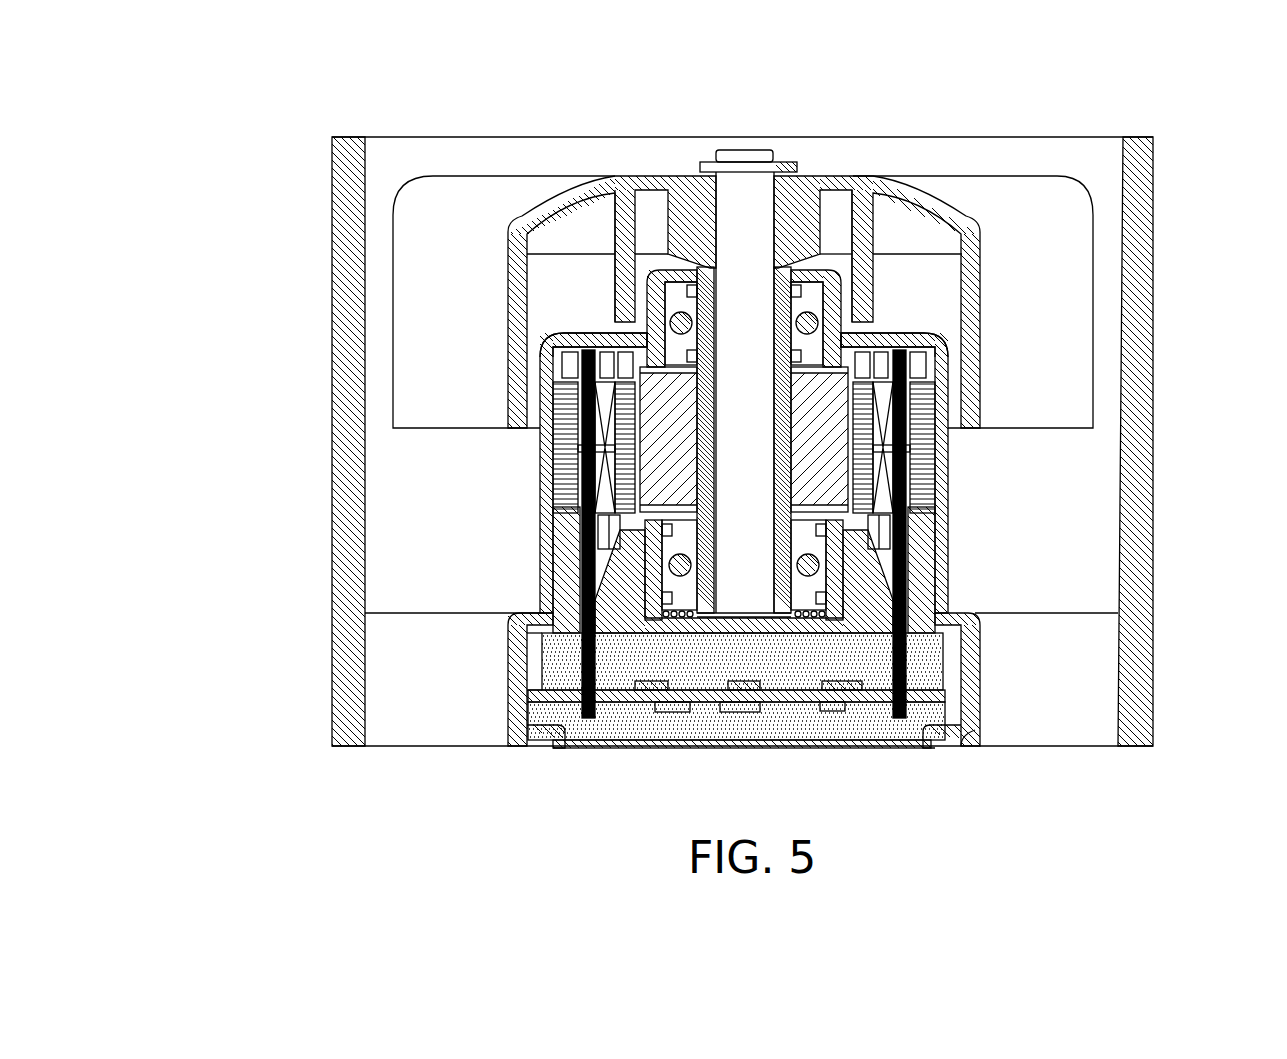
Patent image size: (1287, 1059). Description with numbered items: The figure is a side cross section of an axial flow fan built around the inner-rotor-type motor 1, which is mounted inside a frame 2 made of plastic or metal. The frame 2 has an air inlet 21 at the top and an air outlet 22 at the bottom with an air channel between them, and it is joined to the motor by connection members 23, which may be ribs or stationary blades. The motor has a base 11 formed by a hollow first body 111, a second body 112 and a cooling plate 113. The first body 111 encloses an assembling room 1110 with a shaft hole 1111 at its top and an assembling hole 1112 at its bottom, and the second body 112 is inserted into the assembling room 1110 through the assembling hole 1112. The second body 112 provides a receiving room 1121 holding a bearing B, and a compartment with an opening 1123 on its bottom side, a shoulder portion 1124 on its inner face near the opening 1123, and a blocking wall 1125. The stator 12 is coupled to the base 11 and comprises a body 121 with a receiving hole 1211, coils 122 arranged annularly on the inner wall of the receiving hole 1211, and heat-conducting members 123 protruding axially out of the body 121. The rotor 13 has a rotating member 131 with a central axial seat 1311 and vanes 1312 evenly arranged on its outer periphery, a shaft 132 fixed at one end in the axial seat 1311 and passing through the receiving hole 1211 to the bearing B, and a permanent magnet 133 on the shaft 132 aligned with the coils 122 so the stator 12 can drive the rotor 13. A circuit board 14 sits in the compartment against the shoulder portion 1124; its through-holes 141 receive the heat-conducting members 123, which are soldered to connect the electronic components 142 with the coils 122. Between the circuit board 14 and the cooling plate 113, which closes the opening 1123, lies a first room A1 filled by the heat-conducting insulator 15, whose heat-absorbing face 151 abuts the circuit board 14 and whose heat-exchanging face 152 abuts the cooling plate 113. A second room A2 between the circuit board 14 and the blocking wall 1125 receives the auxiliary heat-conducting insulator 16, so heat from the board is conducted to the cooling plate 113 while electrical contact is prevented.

The inner-rotor-type motor 1 is at (1010, 135).
The frame 2 is at (1145, 345).
The air inlet 21 is at (1077, 137).
The air outlet 22 is at (1086, 749).
The connection members 23 is at (1077, 623).
The base 11 is at (714, 595).
The first body 111 is at (517, 594).
The second body 112 is at (507, 664).
The cooling plate 113 is at (617, 748).
The assembling room 1110 is at (552, 361).
The shaft hole 1111 is at (687, 266).
The assembling hole 1112 is at (951, 749).
The receiving room 1121 is at (644, 570).
The opening 1123 is at (973, 707).
The shoulder portion 1124 is at (973, 666).
The blocking wall 1125 is at (551, 666).
The stator 12 is at (758, 534).
The body 121 is at (893, 547).
The coils 122 is at (883, 418).
The heat-conducting members 123 is at (913, 462).
The receiving hole 1211 is at (627, 530).
The rotor 13 is at (547, 186).
The rotating member 131 is at (906, 191).
The axial seat 1311 is at (812, 223).
The vanes 1312 is at (423, 190).
The shaft 132 is at (735, 178).
The permanent magnet 133 is at (657, 423).
The circuit board 14 is at (781, 698).
The through-holes 141 is at (898, 690).
The electronic components 142 is at (856, 672).
The heat-conducting insulator 15 is at (603, 746).
The heat-absorbing face 151 is at (630, 704).
The heat-exchanging face 152 is at (673, 748).
The auxiliary heat-conducting insulator 16 is at (933, 653).
The bearing B is at (843, 316).
The first room A1 is at (557, 735).
The second room A2 is at (534, 666).